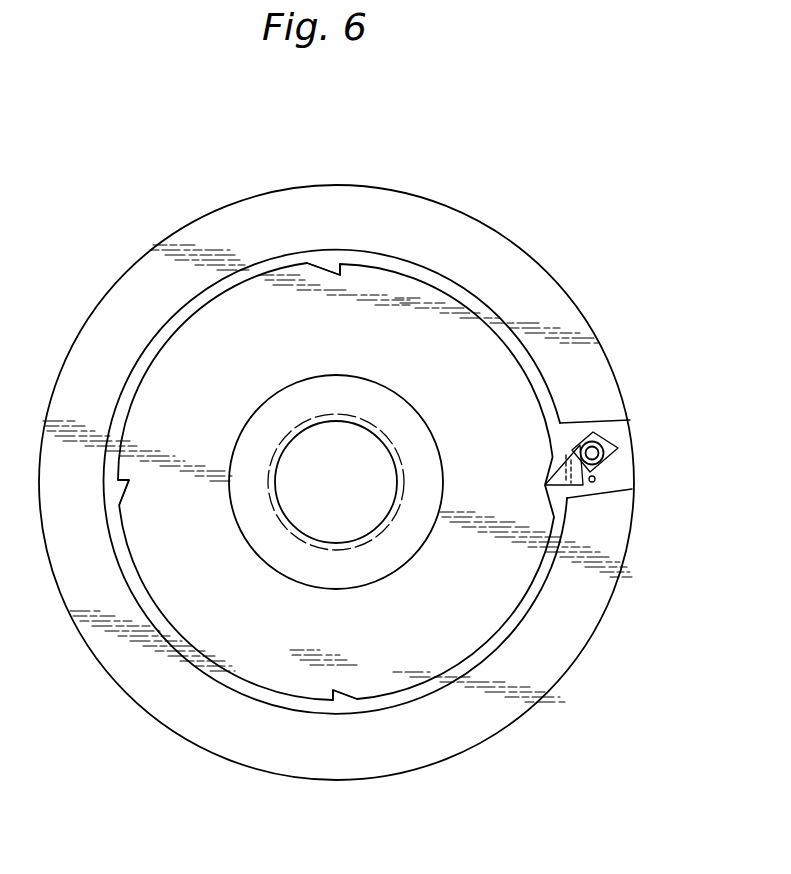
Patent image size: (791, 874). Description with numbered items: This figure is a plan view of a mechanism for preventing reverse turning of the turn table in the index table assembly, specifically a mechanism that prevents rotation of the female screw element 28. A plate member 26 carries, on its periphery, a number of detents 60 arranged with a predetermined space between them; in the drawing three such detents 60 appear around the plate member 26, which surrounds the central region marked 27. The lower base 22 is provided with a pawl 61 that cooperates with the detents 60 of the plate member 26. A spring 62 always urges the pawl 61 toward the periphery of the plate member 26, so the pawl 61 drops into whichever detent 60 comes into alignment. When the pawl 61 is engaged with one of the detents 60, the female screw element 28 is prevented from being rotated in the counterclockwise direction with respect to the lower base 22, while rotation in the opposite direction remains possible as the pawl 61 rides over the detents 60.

The lower base 22 is at (500, 246).
The plate member 26 is at (508, 372).
The central bore 27 is at (323, 492).
The female screw element 28 is at (388, 562).
The detents 60 is at (339, 262).
The pawl 61 is at (600, 442).
The spring 62 is at (618, 448).